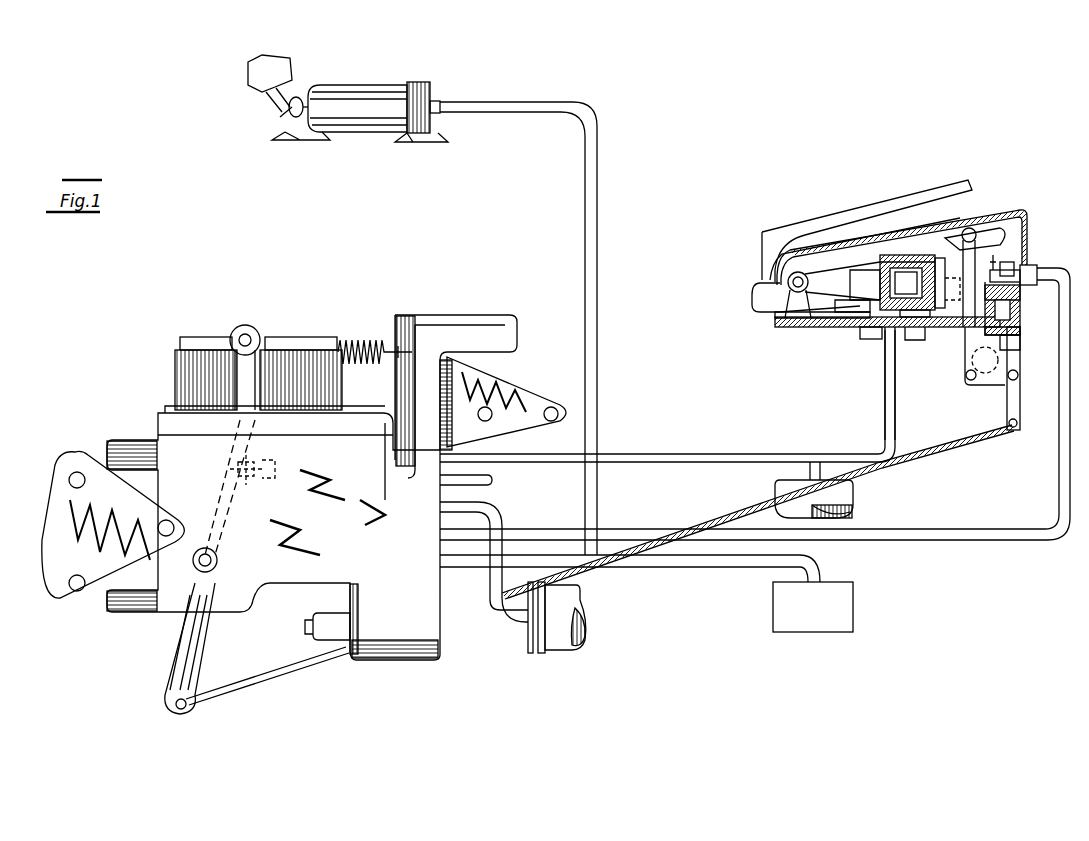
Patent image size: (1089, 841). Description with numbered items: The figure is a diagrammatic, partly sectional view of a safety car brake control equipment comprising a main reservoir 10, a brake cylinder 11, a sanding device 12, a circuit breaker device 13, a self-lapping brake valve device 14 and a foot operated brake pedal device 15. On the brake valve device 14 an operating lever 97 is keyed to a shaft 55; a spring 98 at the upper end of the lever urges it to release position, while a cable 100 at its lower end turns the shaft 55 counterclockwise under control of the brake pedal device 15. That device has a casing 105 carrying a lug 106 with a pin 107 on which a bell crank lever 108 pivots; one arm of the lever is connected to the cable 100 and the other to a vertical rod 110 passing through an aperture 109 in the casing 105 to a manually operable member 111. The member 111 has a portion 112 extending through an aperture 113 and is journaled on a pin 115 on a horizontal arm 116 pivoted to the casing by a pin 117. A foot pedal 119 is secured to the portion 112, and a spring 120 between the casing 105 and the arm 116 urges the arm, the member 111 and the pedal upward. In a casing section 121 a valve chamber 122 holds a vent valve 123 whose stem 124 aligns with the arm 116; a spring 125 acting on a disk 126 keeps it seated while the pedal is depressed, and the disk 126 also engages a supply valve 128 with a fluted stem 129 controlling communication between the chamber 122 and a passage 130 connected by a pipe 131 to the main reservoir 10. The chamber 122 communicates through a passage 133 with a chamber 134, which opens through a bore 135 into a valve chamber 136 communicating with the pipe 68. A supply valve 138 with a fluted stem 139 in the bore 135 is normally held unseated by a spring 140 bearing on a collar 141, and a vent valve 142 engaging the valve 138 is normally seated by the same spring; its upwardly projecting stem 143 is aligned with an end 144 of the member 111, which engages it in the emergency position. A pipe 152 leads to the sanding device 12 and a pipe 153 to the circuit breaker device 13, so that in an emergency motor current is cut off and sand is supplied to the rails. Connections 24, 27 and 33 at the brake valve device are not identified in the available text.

The main reservoir 10 is at (848, 497).
The brake cylinder 11 is at (565, 600).
The sanding device 12 is at (855, 605).
The circuit breaker device 13 is at (372, 95).
The self-lapping brake valve device 14 is at (156, 413).
The foot operated brake pedal device 15 is at (1028, 210).
The conduit 24 is at (495, 622).
The conduit 27 is at (635, 455).
The port 33 is at (494, 482).
The shaft 55 is at (213, 565).
The pipe 68 is at (887, 544).
The operating lever 97 is at (185, 660).
The spring 98 is at (352, 340).
The cable 100 is at (287, 675).
The casing 105 is at (818, 328).
The lug 106 is at (1016, 362).
The pin 107 is at (1018, 378).
The bell crank lever 108 is at (1018, 395).
The aperture 109 is at (968, 378).
The rod 110 is at (980, 368).
The manually operable member 111 is at (955, 240).
The portion 112 is at (770, 295).
The aperture 113 is at (778, 317).
The pin 115 is at (802, 333).
The arm 116 is at (853, 308).
The pin 117 is at (953, 330).
The foot pedal 119 is at (803, 230).
The spring 120 is at (868, 340).
The casing section 121 is at (845, 268).
The valve chamber 122 is at (958, 290).
The vent valve 123 is at (922, 340).
The stem 124 is at (916, 330).
The spring 125 is at (877, 288).
The disk 126 is at (836, 287).
The supply valve 128 is at (936, 260).
The fluted stem 129 is at (914, 285).
The passage 130 is at (889, 288).
The pipe 131 is at (896, 426).
The passage 133 is at (988, 360).
The chamber 134 is at (1010, 345).
The bore 135 is at (1008, 330).
The valve chamber 136 is at (1033, 275).
The supply valve 138 is at (1010, 295).
The fluted stem 139 is at (1010, 313).
The spring 140 is at (1020, 272).
The collar 141 is at (1020, 258).
The vent valve 142 is at (1017, 256).
The stem 143 is at (994, 253).
The end 144 is at (987, 228).
The pipe 152 is at (458, 560).
The pipe 153 is at (598, 385).